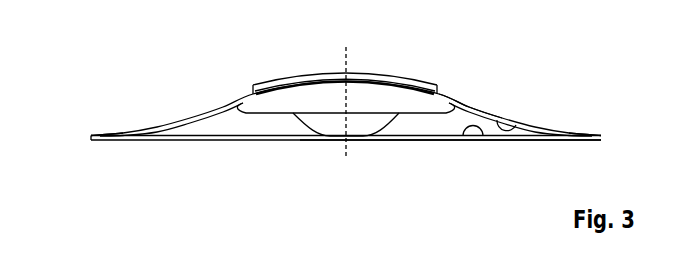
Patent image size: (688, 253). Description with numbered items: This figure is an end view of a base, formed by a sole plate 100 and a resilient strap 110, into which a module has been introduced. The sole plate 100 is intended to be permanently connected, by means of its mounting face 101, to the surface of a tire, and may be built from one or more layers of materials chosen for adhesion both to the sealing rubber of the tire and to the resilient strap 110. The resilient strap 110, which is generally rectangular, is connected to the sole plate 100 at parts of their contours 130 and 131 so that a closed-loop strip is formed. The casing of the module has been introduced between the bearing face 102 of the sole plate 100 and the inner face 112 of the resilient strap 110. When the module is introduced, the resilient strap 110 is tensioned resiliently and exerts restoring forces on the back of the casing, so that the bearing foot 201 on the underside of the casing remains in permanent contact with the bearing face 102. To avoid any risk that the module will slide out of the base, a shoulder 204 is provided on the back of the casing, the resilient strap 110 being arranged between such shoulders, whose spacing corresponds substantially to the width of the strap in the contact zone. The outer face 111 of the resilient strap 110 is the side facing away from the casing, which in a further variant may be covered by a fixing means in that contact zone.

The sole plate 100 is at (218, 141).
The mounting face 101 is at (434, 141).
The bearing face of the sole plate 102 is at (464, 136).
The resilient strap 110 is at (207, 113).
The outer face of the resilient strap 111 is at (465, 107).
The inner face of the resilient strap 112 is at (516, 124).
The contour connection part 130 is at (115, 133).
The contour connection part 131 is at (595, 136).
The foot 201 is at (342, 127).
The shoulder 204 is at (322, 77).